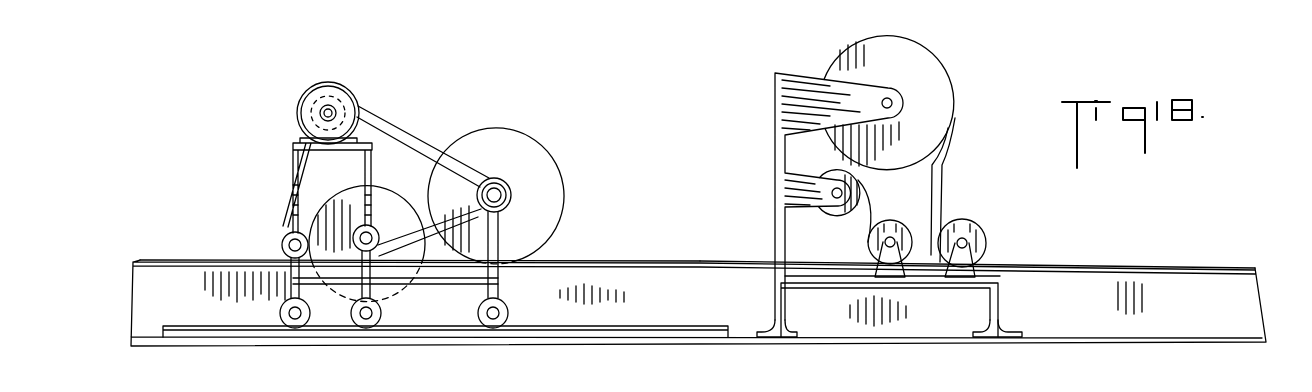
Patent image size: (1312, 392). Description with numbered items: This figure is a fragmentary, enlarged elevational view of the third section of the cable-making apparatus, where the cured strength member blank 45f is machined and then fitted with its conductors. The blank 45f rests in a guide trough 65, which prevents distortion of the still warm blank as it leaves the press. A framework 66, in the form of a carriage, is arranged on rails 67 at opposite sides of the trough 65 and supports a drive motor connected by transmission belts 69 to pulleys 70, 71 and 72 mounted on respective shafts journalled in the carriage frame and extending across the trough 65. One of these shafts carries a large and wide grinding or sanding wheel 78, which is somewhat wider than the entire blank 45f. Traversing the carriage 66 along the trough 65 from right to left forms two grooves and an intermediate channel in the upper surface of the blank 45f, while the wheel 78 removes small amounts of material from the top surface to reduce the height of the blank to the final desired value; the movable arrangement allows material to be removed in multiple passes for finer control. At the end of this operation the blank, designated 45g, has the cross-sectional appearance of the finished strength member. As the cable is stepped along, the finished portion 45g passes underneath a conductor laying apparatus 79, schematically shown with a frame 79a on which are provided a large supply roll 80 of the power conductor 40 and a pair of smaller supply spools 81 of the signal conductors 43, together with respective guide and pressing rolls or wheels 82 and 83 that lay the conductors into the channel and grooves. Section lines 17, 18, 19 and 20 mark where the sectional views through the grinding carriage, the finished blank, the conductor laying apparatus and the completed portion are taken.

The section line 17- 17 is at (213, 80).
The section line 18- 18 is at (600, 233).
The section line 19- 19 is at (735, 44).
The section line 20- 20 is at (1098, 229).
The power conductor 40 is at (943, 183).
The signal conductors 43 is at (868, 207).
The strength member blank 45f is at (182, 262).
The finished strength member portion 45g is at (695, 262).
The guide trough 65 is at (131, 304).
The framework 66 is at (293, 168).
The rails 67 is at (388, 329).
The transmission belts 69 is at (420, 142).
The pulley 70 is at (283, 238).
The pulley 71 is at (383, 228).
The pulley 72 is at (511, 195).
The grinding or sanding wheel 78 is at (545, 166).
The conductor laying apparatus 79 is at (751, 163).
The frame 79a is at (997, 305).
The supply roll 80 is at (933, 63).
The supply spools 81 is at (828, 215).
The guide and pressing roll 82 is at (980, 232).
The guide and pressing roll 83 is at (895, 232).